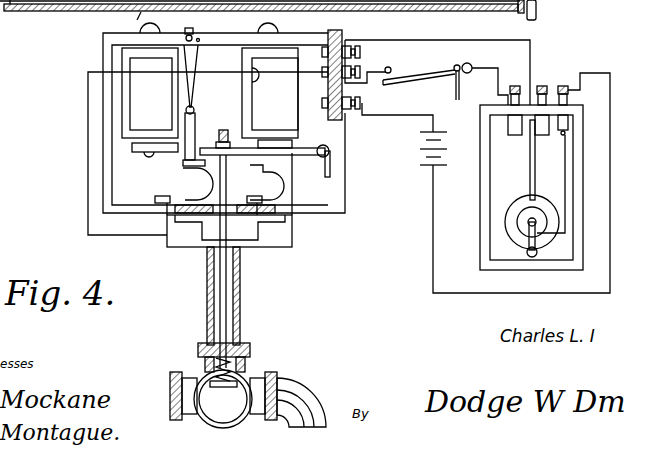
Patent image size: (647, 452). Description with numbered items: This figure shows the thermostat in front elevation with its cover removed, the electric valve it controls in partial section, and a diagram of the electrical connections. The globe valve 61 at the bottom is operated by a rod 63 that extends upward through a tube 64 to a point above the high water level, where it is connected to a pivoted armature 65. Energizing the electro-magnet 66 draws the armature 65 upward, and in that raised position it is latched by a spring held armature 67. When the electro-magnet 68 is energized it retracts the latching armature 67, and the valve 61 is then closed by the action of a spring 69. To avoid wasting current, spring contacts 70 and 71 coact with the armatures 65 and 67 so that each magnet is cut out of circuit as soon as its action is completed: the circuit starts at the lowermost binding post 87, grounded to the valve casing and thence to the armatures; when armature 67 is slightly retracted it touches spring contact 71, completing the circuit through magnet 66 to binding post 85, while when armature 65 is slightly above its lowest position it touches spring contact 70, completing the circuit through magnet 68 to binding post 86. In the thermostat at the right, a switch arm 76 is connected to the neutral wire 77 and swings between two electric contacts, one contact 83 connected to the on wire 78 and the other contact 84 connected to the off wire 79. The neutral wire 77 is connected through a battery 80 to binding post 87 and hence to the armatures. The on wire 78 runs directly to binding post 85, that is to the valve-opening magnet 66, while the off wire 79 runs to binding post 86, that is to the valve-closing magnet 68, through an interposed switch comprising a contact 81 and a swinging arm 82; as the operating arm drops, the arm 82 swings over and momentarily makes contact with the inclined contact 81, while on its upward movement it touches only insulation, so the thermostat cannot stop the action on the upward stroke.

The globe valve 61 is at (249, 377).
The rod 63 is at (226, 284).
The tube 64 is at (240, 312).
The pivoted armature 65 is at (206, 148).
The electro-magnet 66 is at (288, 117).
The spring held armature 67 is at (196, 116).
The electro-magnet 68 is at (168, 118).
The spring 69 is at (240, 352).
The spring contact 70 is at (268, 172).
The spring contact 71 is at (181, 166).
The switch arm 76 is at (533, 186).
The neutral wire 77 is at (432, 114).
The on wire 78 is at (532, 72).
The off wire 79 is at (500, 68).
The battery 80 is at (430, 168).
The contact 81 is at (420, 78).
The swinging arm 82 is at (467, 63).
The electric contact 83 is at (542, 135).
The electric contact 84 is at (518, 135).
The binding post 85 is at (363, 47).
The binding post 86 is at (360, 68).
The binding post 87 is at (358, 108).